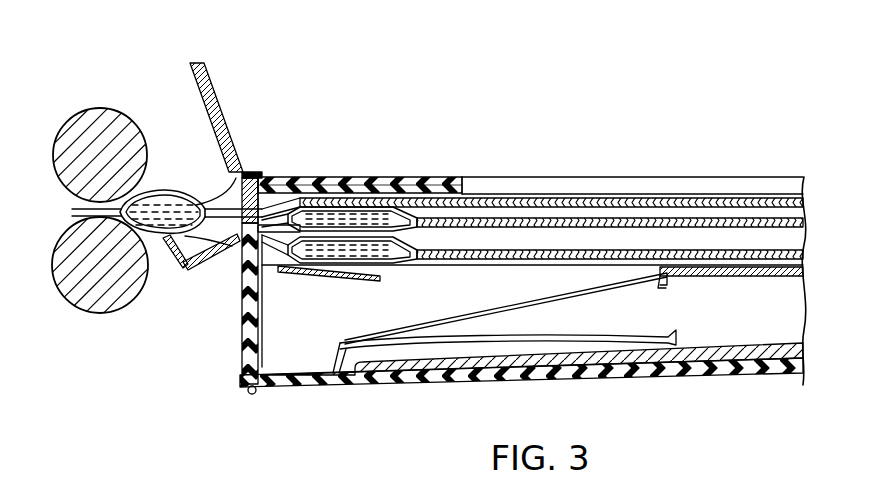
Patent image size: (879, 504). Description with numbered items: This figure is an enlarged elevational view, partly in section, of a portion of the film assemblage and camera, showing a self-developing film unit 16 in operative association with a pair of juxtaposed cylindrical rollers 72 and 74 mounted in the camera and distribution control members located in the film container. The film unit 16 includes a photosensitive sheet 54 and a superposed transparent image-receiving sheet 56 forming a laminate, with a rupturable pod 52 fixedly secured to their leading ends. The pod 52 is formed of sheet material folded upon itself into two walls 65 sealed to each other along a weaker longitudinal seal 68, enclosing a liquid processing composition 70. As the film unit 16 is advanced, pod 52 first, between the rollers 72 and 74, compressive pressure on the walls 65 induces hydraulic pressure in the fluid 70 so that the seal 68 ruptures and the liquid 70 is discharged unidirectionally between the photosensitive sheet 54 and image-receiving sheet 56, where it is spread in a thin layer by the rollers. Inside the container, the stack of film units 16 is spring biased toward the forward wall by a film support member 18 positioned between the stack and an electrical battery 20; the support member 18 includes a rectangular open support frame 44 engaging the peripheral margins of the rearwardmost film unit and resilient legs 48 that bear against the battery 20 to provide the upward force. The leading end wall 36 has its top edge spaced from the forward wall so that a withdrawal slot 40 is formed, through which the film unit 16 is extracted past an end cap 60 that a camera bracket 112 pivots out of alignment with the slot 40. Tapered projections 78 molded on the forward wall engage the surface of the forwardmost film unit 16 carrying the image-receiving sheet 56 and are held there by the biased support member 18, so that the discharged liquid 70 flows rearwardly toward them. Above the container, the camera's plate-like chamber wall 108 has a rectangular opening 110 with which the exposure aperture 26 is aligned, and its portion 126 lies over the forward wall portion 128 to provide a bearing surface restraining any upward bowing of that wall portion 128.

The self-developing film unit 16 is at (551, 228).
The film support member 18 is at (714, 288).
The electrical battery 20 is at (417, 374).
The exposure aperture 26 is at (486, 190).
The leading end wall 36 is at (262, 336).
The withdrawal slot 40 is at (266, 240).
The support frame 44 is at (356, 282).
The resilient legs 48 is at (558, 303).
The rupturable pod 52 is at (502, 377).
The photosensitive sheet 54 is at (581, 229).
The image-receiving sheet 56 is at (652, 228).
The end cap 60 is at (212, 258).
The pod walls 65 is at (158, 200).
The longitudinal seal 68 is at (413, 262).
The liquid processing composition 70 is at (170, 237).
The cylindrical roller 72 is at (118, 110).
The cylindrical roller 74 is at (108, 290).
The projections 78 is at (280, 186).
The top or forward wall 108 is at (372, 154).
The rectangular opening 110 is at (448, 178).
The brackets 112 is at (235, 197).
The plate portion 126 is at (325, 177).
The forward wall portion 128 is at (386, 178).